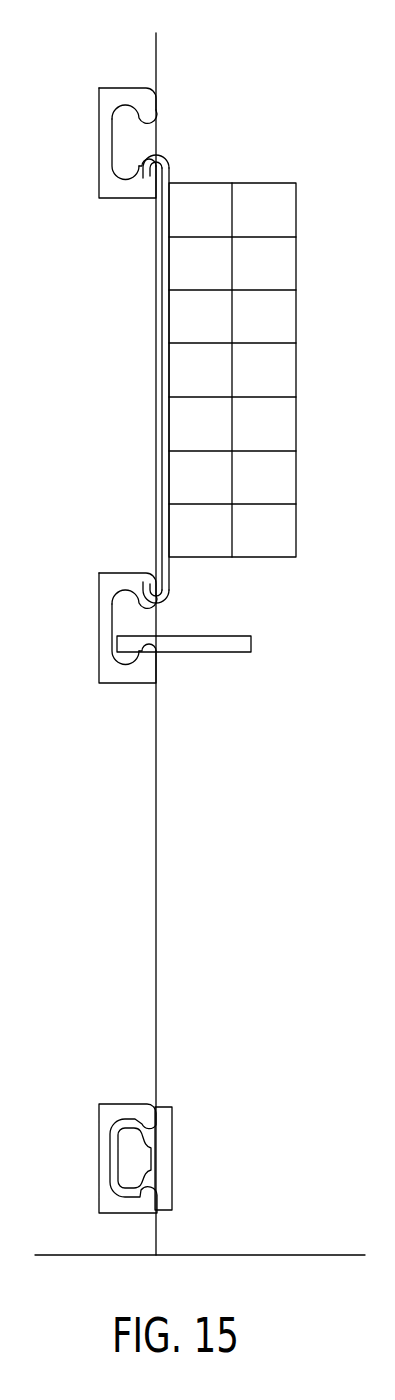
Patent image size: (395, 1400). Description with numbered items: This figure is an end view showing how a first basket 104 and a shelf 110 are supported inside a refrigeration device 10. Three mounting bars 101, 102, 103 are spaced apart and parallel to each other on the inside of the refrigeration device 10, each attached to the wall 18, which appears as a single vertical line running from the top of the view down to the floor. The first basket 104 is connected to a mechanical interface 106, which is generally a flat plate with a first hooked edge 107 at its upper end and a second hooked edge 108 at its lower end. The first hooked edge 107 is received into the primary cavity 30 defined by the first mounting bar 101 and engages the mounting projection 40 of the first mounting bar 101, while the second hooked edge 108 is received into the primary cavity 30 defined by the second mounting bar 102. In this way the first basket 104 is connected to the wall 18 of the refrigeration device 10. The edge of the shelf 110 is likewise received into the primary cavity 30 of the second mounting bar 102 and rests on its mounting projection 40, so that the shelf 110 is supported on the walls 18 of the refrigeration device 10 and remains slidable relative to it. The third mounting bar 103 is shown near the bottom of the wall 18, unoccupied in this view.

The refrigeration device 10 is at (84, 88).
The wall 18 is at (157, 57).
The primary cavity 30 is at (130, 130).
The mounting projection 40 is at (148, 183).
The first mounting bar 101 is at (114, 96).
The second mounting bar 102 is at (128, 583).
The third mounting bar 103 is at (107, 1108).
The first basket 104 is at (297, 284).
The mechanical interface 106 is at (170, 376).
The first hooked edge 107 is at (130, 172).
The second hooked edge 108 is at (157, 610).
The shelf 110 is at (241, 636).